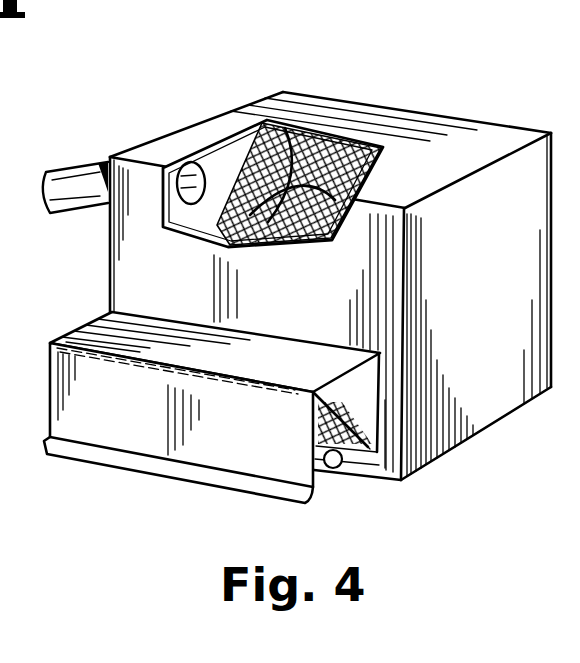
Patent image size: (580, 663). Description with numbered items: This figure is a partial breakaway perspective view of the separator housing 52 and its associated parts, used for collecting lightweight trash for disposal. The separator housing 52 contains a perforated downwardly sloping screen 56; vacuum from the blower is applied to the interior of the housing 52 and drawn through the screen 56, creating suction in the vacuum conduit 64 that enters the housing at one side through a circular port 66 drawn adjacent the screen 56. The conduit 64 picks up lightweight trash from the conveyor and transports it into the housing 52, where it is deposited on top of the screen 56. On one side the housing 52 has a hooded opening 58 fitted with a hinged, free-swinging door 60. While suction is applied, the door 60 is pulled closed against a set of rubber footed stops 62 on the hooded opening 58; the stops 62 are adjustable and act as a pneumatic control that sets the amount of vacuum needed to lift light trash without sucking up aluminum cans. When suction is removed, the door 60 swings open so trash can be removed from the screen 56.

The separator housing 52 is at (160, 270).
The perforated downwardly sloping screen 56 is at (334, 130).
The hooded opening 58 is at (322, 344).
The hinged, free-swinging door 60 is at (203, 458).
The rubber footed stops 62 is at (336, 467).
The vacuum conduit 64 is at (68, 182).
The hole 66 is at (178, 165).